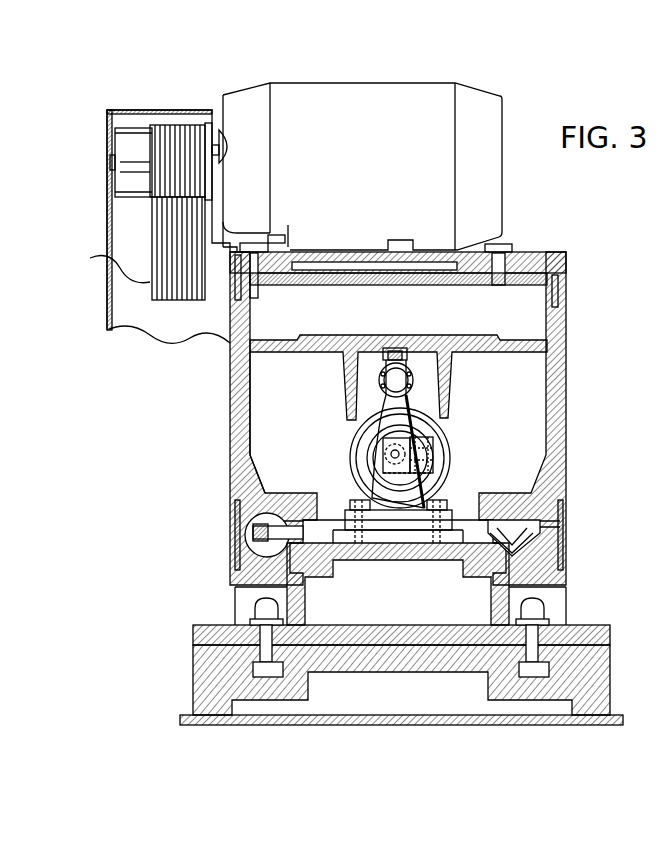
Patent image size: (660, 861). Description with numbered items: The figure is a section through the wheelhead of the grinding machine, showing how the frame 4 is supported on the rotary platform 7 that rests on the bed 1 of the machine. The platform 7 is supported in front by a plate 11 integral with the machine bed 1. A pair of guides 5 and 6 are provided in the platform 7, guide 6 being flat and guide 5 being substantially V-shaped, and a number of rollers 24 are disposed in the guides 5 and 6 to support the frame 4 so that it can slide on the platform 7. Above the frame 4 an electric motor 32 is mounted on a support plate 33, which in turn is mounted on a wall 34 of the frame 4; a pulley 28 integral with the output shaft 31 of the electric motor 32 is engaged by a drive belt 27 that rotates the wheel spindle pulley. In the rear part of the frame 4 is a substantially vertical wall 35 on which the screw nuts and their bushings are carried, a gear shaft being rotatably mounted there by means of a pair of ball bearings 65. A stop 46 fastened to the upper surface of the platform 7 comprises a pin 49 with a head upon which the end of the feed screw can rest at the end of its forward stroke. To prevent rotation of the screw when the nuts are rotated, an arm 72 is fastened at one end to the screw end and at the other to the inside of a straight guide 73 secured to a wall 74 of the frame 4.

The bed 1 is at (612, 716).
The frame 4 is at (560, 400).
The guide 5 is at (537, 545).
The guide 6 is at (232, 562).
The rotary platform 7 is at (513, 597).
The plate 11 is at (590, 668).
The rollers 24 is at (237, 510).
The drive belt 27 is at (155, 270).
The pulley 28 is at (130, 138).
The output shaft 31 is at (219, 140).
The electric motor 32 is at (362, 107).
The support plate 33 is at (530, 262).
The wall 34 is at (336, 285).
The vertical wall 35 is at (288, 418).
The stop 46 is at (390, 500).
The pin 49 is at (385, 455).
The ball bearings 65 is at (430, 398).
The arm 72 is at (413, 380).
The straight guide 73 is at (412, 362).
The wall 74 is at (394, 350).